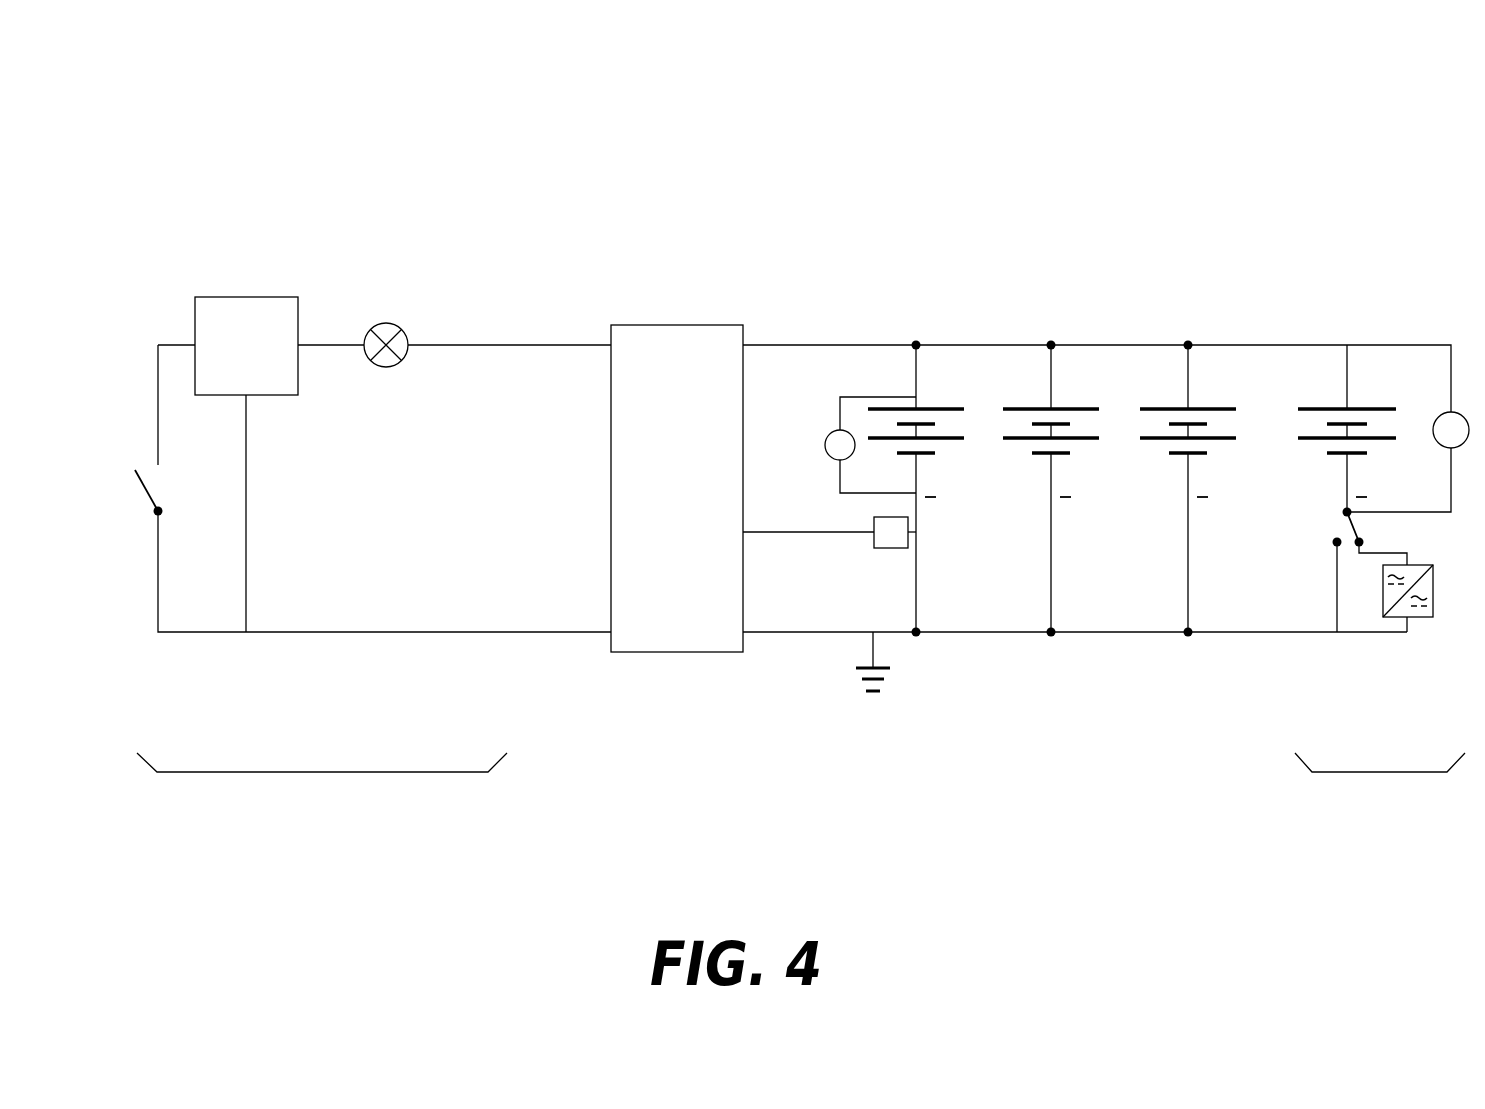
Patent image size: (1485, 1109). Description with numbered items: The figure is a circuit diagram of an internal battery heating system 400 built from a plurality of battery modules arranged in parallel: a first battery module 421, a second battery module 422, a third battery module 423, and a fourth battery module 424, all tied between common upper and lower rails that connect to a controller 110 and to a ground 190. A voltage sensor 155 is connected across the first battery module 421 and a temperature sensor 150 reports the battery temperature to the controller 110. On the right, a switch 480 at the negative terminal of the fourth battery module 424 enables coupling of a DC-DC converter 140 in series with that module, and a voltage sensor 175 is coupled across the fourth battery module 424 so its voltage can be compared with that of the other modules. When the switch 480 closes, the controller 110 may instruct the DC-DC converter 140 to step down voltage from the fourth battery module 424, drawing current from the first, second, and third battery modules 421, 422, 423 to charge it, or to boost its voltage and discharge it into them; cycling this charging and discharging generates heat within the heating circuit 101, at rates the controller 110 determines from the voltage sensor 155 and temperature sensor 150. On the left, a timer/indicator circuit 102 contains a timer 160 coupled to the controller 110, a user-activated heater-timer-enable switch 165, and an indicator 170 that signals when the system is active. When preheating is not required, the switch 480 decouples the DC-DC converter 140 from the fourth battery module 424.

The internal battery heating system 400 is at (268, 150).
The timer 160 is at (262, 356).
The indicator 170 is at (388, 323).
The heater-timer-enable switch 165 is at (150, 532).
The controller 110 is at (693, 500).
The voltage sensor 155 is at (826, 440).
The first battery module 421 is at (957, 492).
The second battery module 422 is at (1095, 492).
The third battery module 423 is at (1227, 492).
The fourth battery module 424 is at (1393, 425).
The voltage sensor 175 is at (1437, 441).
The switch 480 is at (1328, 522).
The DC-DC converter 140 is at (1418, 620).
The temperature sensor 150 is at (893, 550).
The ground 190 is at (846, 686).
The timer/indicator circuit 102 is at (302, 772).
The heating circuit 101 is at (1378, 772).